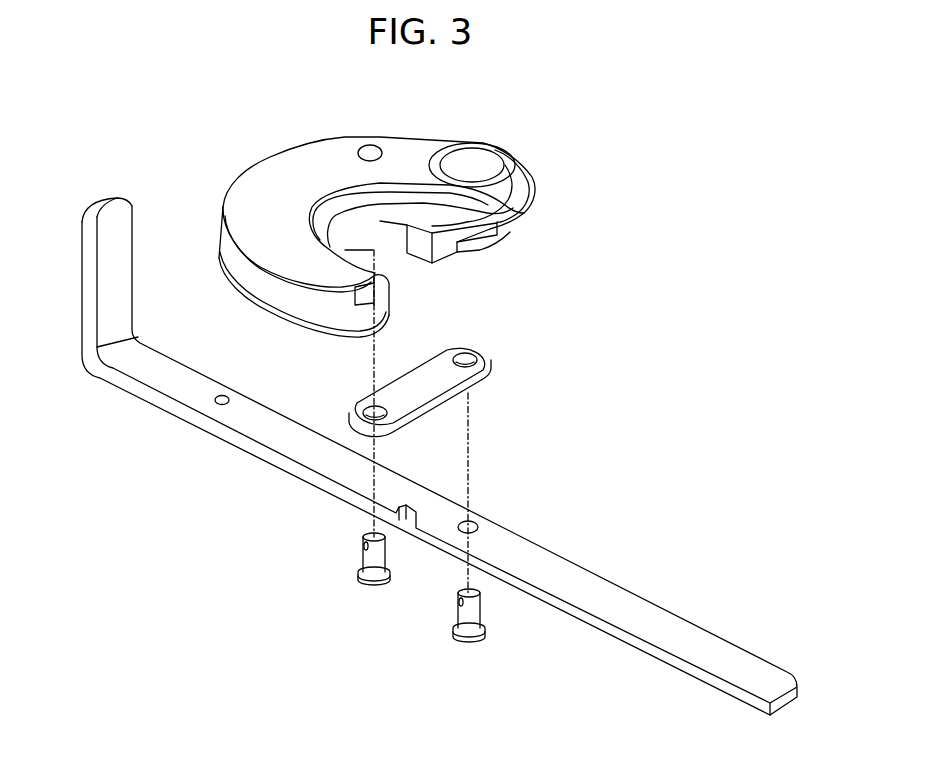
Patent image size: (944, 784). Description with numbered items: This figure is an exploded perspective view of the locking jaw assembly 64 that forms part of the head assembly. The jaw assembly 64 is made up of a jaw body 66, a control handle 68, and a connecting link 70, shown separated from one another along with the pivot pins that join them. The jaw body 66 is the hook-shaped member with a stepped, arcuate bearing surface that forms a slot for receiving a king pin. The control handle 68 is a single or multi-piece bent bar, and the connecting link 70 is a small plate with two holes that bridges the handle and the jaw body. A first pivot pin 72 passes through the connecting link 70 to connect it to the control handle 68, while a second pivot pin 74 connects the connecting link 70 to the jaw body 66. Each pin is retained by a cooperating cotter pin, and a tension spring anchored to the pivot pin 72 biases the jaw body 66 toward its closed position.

The locking jaw assembly 64 is at (602, 163).
The jaw body 66 is at (267, 162).
The control handle 68 is at (233, 445).
The connecting link 70 is at (437, 373).
The first pivot pin 72 is at (483, 603).
The second pivot pin 74 is at (353, 547).